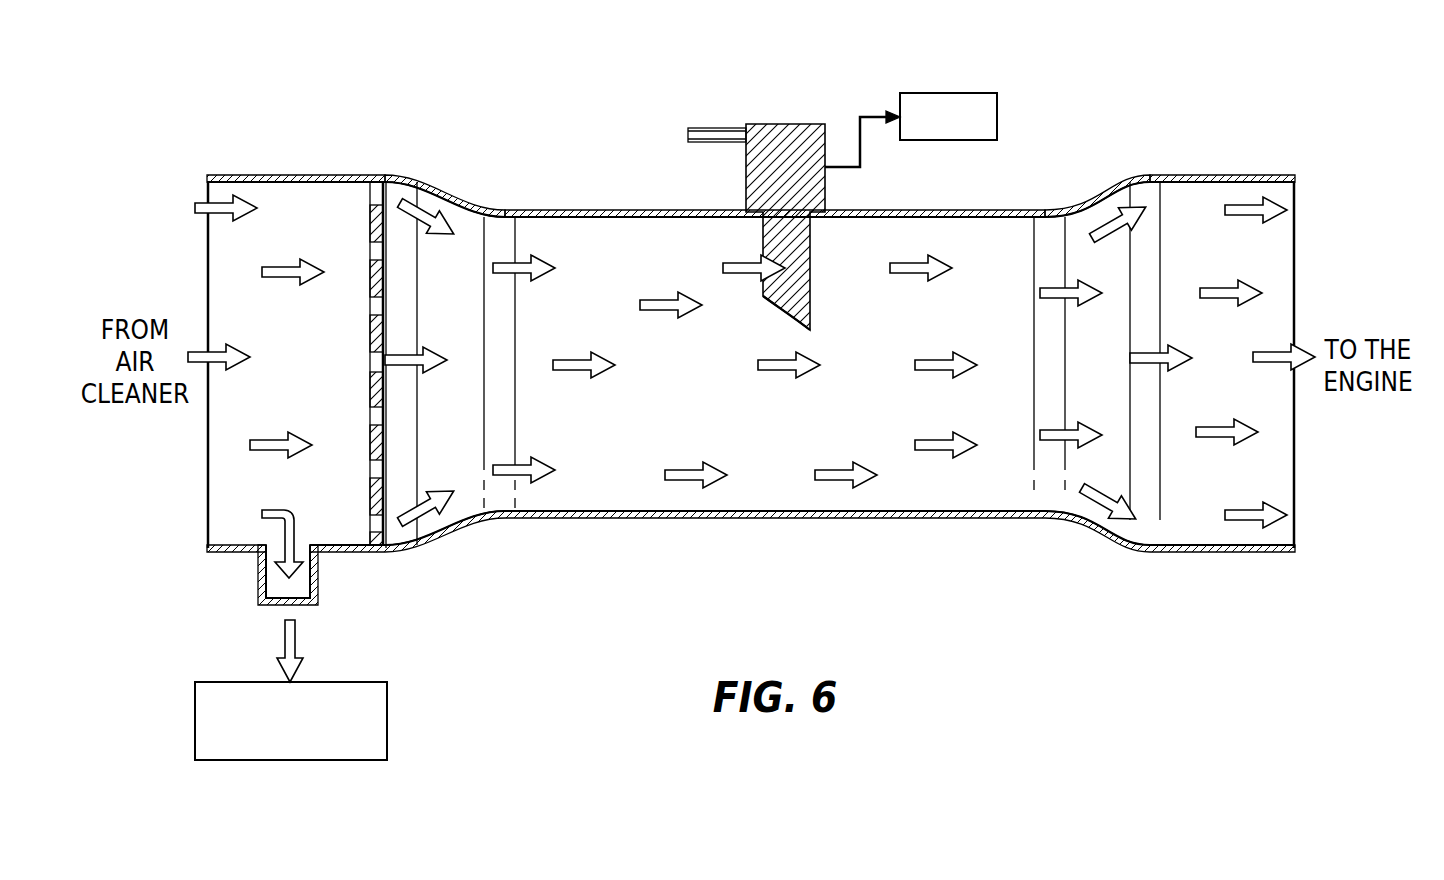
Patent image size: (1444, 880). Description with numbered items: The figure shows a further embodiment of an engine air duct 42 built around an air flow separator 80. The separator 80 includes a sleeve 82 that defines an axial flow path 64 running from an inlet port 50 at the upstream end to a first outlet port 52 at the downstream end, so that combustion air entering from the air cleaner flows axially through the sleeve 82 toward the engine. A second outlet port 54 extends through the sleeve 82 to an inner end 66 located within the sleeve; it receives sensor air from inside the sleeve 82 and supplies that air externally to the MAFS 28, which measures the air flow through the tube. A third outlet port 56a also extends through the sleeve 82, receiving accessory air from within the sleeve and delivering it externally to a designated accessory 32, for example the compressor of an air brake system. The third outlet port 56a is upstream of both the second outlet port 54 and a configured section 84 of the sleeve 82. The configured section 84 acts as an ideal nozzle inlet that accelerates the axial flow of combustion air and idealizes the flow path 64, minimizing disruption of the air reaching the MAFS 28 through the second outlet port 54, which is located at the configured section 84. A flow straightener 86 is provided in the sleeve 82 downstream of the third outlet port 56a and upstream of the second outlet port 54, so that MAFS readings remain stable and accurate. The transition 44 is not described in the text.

The MAFS 28 is at (945, 93).
The designated accessory 32 is at (362, 682).
The engine air duct 42 is at (222, 180).
The outlet transition wall 44 is at (1000, 202).
The inlet port 50 is at (332, 391).
The first outlet port 52 is at (1276, 403).
The second outlet port 54 is at (780, 137).
The third outlet port 56a is at (318, 572).
The axial flow path 64 is at (785, 380).
The inner end 66 is at (783, 318).
The air flow separator 80 is at (452, 190).
The sleeve 82 is at (594, 216).
The configured section 84 is at (500, 218).
The flow straightener 86 is at (368, 281).